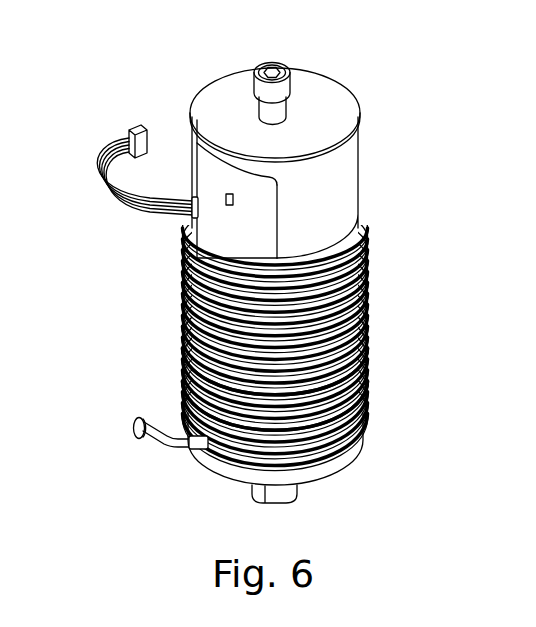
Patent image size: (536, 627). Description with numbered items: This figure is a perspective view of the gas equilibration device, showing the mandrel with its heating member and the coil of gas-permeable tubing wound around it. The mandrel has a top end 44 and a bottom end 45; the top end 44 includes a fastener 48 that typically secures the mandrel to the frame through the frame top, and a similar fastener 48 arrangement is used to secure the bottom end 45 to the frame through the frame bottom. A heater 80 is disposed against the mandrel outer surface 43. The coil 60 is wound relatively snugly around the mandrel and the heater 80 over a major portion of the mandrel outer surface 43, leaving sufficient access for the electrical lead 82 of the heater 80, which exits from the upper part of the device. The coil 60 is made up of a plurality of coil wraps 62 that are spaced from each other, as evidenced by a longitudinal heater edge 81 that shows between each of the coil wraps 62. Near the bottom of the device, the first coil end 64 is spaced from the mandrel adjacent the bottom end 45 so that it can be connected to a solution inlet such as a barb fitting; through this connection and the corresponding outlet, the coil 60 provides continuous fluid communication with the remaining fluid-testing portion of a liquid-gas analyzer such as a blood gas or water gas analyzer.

The mandrel outer surface 43 is at (352, 212).
The top end 44 is at (343, 113).
The bottom end 45 is at (330, 479).
The fastener 48 is at (281, 58).
The coil 60 is at (368, 318).
The coil wraps 62 is at (367, 378).
The first coil end 64 is at (137, 440).
The heater 80 is at (280, 213).
The longitudinal heater edge 81 is at (278, 231).
The electrical lead 82 is at (122, 192).